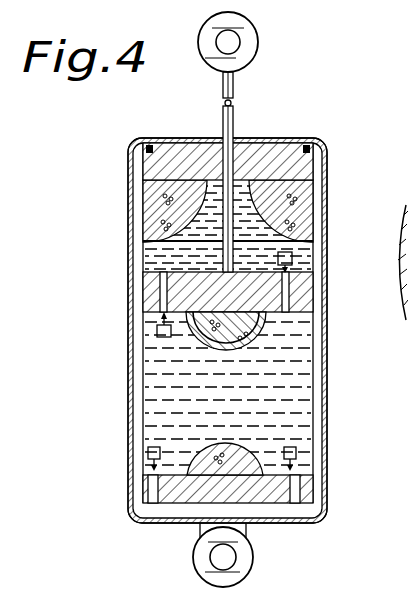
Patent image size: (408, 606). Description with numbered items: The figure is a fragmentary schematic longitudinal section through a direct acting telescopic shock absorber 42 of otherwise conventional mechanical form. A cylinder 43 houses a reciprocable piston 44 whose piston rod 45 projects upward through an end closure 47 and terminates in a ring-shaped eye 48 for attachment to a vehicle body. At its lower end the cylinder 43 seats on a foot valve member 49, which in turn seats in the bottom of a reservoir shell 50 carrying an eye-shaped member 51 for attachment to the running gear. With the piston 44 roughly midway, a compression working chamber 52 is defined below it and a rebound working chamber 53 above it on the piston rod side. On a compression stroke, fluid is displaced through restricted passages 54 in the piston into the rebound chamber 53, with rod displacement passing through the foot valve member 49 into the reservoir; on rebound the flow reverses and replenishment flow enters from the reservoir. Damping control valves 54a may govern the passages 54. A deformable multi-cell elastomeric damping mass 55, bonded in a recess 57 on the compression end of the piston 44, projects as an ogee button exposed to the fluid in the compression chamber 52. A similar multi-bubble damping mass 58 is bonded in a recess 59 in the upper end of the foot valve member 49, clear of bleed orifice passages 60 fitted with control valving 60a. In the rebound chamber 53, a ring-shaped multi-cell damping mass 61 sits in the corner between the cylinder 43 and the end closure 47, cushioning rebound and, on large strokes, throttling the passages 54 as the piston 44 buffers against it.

The telescopic shock absorber 42 is at (333, 169).
The cylinder 43 is at (318, 352).
The piston 44 is at (192, 323).
The piston rod 45 is at (233, 118).
The end closure 47 is at (197, 150).
The eye 48 is at (253, 38).
The foot valve member 49 is at (271, 452).
The reservoir shell 50 is at (331, 380).
The eye-shaped member 51 is at (200, 556).
The compression working chamber 52 is at (160, 410).
The rebound working chamber 53 is at (152, 256).
The restricted passages 54 is at (158, 290).
The damping control valves 54a is at (157, 332).
The damping mass 55 is at (214, 343).
The recess 57 is at (195, 331).
The damping mass 58 is at (206, 472).
The recess 59 is at (152, 511).
The bleed orifice passages 60 is at (158, 480).
The control valving 60a is at (148, 451).
The damping mass 61 is at (155, 188).